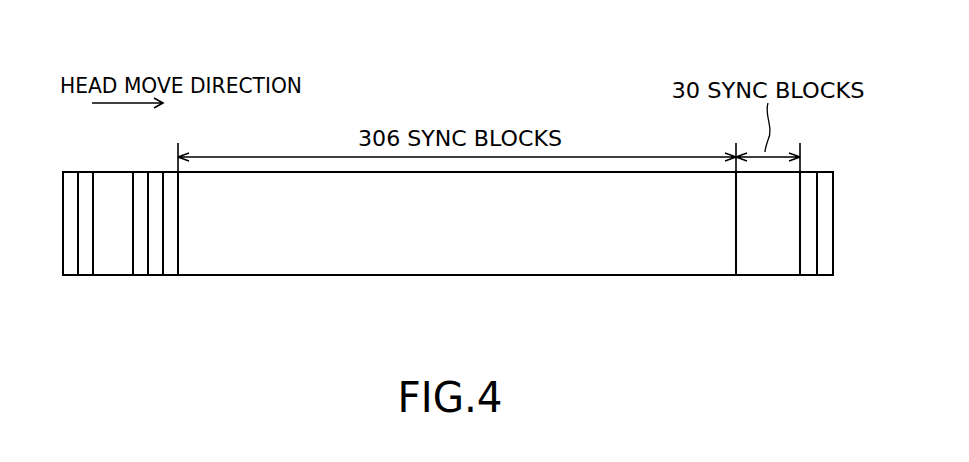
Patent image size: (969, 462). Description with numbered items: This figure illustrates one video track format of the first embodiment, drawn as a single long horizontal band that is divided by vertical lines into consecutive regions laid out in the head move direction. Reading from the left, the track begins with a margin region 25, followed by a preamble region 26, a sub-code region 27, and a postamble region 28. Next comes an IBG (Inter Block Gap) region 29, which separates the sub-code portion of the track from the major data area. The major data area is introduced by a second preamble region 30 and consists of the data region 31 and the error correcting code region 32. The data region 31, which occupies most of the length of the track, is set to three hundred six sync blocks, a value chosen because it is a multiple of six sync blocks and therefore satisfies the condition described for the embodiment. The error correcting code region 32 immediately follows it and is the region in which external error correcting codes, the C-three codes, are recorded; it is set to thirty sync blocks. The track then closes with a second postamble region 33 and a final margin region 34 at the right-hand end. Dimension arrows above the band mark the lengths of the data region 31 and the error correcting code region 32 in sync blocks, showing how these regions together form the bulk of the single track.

The margin region 25 is at (70, 272).
The preamble region 26 is at (84, 175).
The sub-code region 27 is at (112, 272).
The postamble region 28 is at (139, 175).
The IBG (Inter Block Gap) region 29 is at (157, 272).
The preamble region 30 is at (170, 272).
The data region 31 is at (436, 272).
The error correcting code region 32 is at (763, 272).
The postamble region 33 is at (808, 272).
The margin region 34 is at (823, 175).